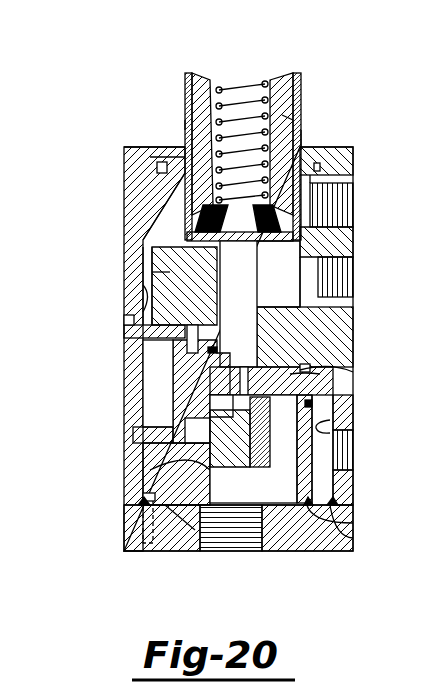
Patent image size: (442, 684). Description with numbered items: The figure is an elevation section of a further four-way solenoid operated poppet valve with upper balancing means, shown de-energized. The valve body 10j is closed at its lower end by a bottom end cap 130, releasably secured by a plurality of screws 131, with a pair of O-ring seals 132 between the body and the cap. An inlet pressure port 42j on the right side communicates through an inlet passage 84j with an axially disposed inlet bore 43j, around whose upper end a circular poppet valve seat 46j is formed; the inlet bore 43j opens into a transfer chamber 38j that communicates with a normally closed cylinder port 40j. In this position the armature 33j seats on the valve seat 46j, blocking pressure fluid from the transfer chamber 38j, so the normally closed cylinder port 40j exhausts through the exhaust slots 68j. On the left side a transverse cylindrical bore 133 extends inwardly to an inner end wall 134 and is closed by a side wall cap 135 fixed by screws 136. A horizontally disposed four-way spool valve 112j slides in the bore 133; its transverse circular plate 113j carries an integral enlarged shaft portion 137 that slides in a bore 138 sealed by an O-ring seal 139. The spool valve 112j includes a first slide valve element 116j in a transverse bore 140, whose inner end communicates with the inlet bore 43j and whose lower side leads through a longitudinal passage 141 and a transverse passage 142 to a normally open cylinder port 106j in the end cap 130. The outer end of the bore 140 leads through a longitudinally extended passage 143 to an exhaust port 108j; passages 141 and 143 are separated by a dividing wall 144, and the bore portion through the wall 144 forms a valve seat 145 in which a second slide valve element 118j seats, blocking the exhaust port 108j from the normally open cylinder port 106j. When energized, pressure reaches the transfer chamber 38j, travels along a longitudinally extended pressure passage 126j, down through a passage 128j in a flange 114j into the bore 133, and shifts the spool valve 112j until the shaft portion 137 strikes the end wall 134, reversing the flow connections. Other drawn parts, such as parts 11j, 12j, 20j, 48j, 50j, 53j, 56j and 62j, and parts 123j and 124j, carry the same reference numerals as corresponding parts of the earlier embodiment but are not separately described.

The valve body 10j is at (122, 225).
The housing wall 11j is at (185, 117).
The housing flange 12j is at (185, 140).
The cap member 20j is at (321, 167).
The armature 33j is at (284, 118).
The transfer chamber 38j is at (306, 240).
The normally closed cylinder port 40j is at (337, 204).
The inlet pressure port 42j is at (338, 262).
The inlet bore 43j is at (180, 275).
The circular poppet valve seat 46j is at (203, 212).
The wall 48j is at (303, 142).
The shoulder 50j is at (182, 125).
The spring seat 53j is at (274, 80).
The spring 56j is at (233, 105).
The inclined wall 62j is at (170, 178).
The exhaust slots 68j is at (188, 76).
The inlet passage 84j is at (286, 309).
The normally open cylinder port 106j is at (247, 538).
The exhaust port 108j is at (342, 470).
The four-way spool valve 112j is at (145, 402).
The transverse circular plate 113j is at (155, 273).
The flange 114j is at (145, 473).
The first slide valve element 116j is at (250, 312).
The second slide valve element 118j is at (305, 388).
The lower chamber 123j is at (250, 468).
The spool land 124j is at (296, 374).
The pressure passage 126j is at (148, 286).
The passage 128j is at (147, 328).
The bottom end cap 130 is at (175, 548).
The screws 131 is at (130, 544).
The O-ring seals 132 is at (345, 527).
The transverse cylindrical bore 133 is at (186, 378).
The inner end wall 134 is at (238, 322).
The side wall cap 135 is at (143, 352).
The screws 136 is at (128, 318).
The enlarged shaft portion 137 is at (140, 427).
The bore 138 is at (143, 496).
The O-ring seal 139 is at (145, 510).
The transverse bore 140 is at (302, 372).
The longitudinal passage 141 is at (318, 450).
The transverse passage 142 is at (240, 500).
The longitudinally extended passage 143 is at (330, 427).
The dividing wall 144 is at (330, 502).
The valve seat 145 is at (313, 403).